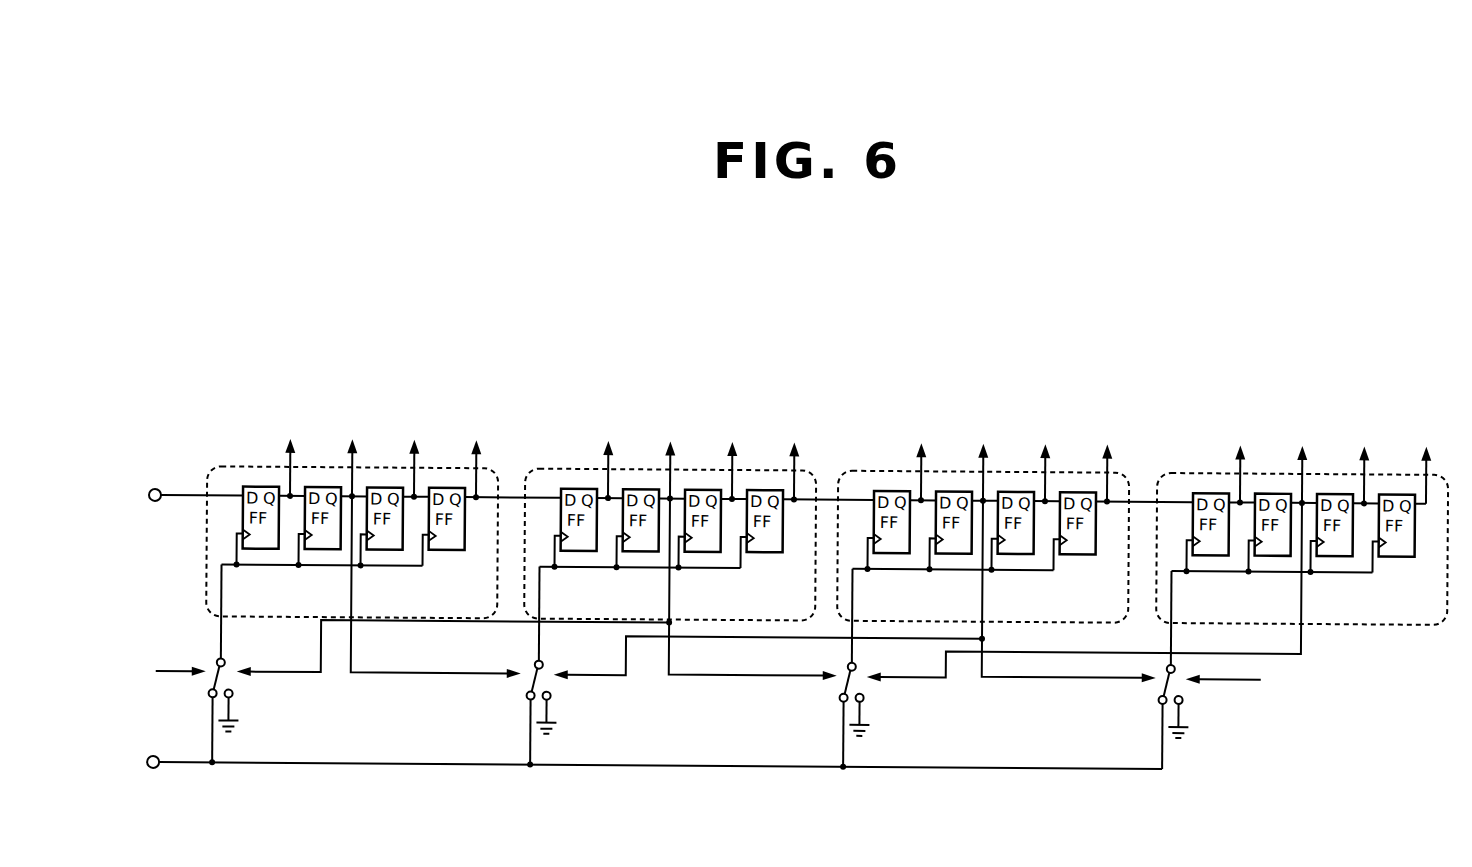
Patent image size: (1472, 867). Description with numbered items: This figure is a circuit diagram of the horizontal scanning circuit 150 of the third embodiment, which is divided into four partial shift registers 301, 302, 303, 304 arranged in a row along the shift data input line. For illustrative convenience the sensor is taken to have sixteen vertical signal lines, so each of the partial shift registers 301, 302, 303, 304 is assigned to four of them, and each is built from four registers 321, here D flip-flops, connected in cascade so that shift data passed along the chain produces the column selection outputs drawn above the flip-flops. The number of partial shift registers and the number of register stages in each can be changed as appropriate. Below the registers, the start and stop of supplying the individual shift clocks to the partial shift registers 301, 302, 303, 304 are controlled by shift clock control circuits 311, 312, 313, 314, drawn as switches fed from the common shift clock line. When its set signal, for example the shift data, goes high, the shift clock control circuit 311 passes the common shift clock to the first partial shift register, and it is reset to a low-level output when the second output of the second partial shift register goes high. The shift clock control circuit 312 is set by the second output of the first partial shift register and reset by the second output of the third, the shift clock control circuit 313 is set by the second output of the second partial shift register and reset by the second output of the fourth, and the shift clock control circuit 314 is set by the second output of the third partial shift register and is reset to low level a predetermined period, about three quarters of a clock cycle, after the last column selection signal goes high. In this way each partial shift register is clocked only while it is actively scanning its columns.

The horizontal scanning circuit 150 is at (816, 352).
The partial shift register 301 is at (445, 466).
The partial shift register 302 is at (569, 466).
The partial shift register 303 is at (878, 466).
The partial shift register 304 is at (1195, 466).
The shift clock control circuit 311 is at (244, 698).
The shift clock control circuit 312 is at (562, 698).
The shift clock control circuit 313 is at (875, 698).
The shift clock control circuit 314 is at (1192, 698).
The register 321 is at (262, 486).